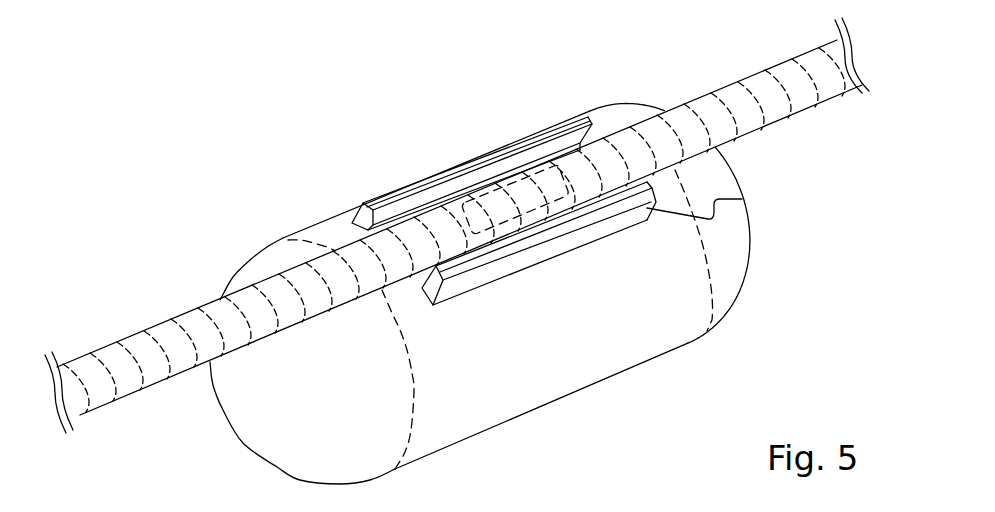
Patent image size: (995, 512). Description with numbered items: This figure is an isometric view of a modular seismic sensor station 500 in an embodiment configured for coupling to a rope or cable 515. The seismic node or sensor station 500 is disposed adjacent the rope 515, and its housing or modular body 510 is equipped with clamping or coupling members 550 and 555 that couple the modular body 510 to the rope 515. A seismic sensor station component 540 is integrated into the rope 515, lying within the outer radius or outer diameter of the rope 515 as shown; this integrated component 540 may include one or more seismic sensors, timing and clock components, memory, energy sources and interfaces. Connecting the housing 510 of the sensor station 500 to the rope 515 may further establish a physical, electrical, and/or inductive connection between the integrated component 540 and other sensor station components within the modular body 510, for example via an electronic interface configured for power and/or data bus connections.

The sensor station 500 is at (213, 161).
The modular body 510 is at (247, 272).
The rope 515 is at (781, 63).
The seismic sensor station component 540 is at (533, 183).
The coupling member 550 is at (357, 208).
The coupling member 555 is at (742, 199).